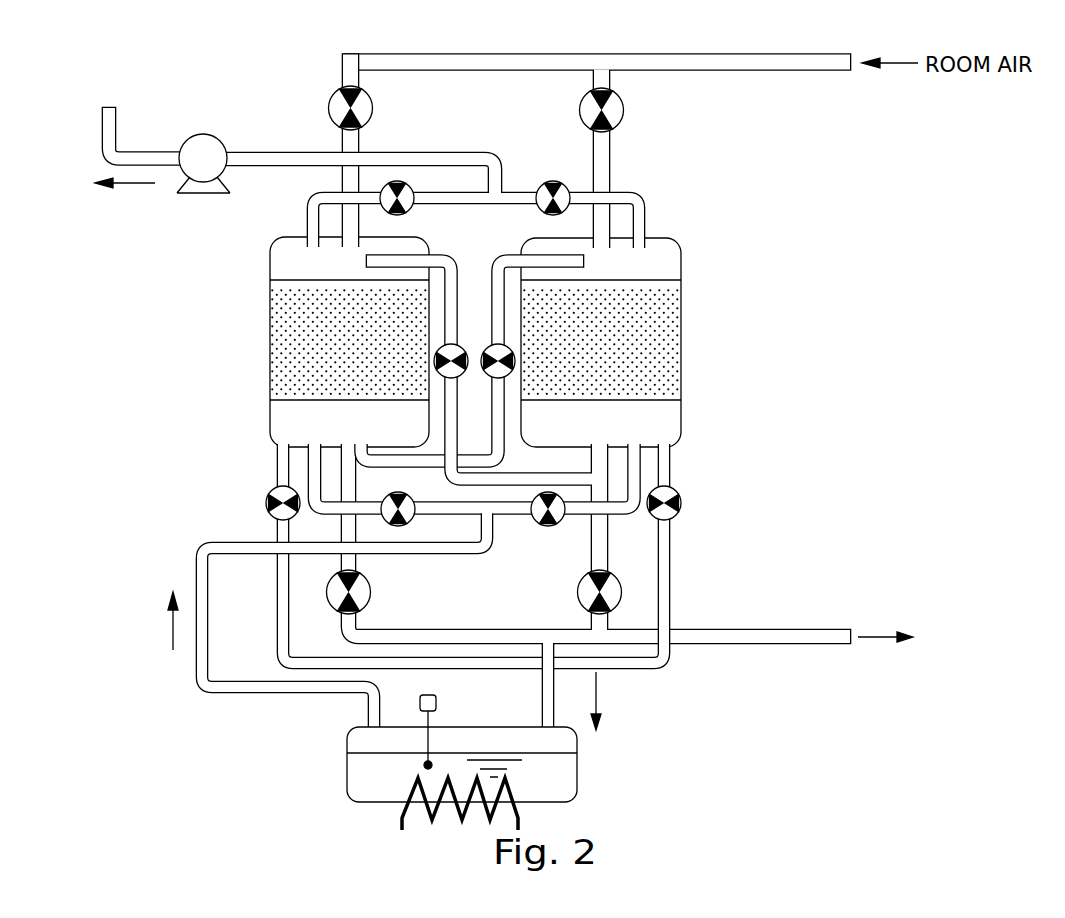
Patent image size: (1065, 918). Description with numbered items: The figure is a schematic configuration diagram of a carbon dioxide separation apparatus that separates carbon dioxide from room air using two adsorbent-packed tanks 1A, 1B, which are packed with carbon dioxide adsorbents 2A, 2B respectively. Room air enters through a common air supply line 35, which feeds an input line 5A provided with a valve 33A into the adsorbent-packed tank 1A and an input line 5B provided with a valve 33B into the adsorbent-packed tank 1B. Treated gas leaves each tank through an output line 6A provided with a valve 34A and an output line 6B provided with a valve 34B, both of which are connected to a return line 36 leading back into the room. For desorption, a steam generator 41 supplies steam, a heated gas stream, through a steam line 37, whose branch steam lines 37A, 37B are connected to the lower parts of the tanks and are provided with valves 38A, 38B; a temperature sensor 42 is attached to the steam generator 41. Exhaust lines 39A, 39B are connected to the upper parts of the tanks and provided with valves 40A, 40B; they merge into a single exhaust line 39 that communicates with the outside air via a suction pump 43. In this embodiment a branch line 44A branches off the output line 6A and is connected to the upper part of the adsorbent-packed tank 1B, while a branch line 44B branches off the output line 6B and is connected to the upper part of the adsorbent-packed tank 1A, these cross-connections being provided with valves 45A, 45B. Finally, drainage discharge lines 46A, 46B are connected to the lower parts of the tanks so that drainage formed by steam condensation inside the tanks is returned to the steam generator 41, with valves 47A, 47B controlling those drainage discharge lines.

The adsorbent-packed tank 1A is at (681, 265).
The adsorbent-packed tank 1B is at (270, 265).
The carbon dioxide adsorbent 2A is at (667, 325).
The carbon dioxide adsorbent 2B is at (283, 337).
The input line 5A is at (610, 152).
The input line 5B is at (342, 142).
The output line 6A is at (607, 548).
The output line 6B is at (342, 534).
The valve 33A is at (624, 108).
The valve 33B is at (329, 103).
The valve 34A is at (578, 592).
The valve 34B is at (327, 607).
The air supply line 35 is at (548, 54).
The return line 36 is at (748, 645).
The steam line 37 is at (195, 665).
The steam line 37A is at (642, 458).
The steam line 37B is at (305, 466).
The valve 38A is at (547, 527).
The valve 38B is at (388, 498).
The exhaust line 39 is at (243, 152).
The exhaust line 39A is at (646, 196).
The exhaust line 39B is at (310, 202).
The valve 40A is at (553, 181).
The valve 40B is at (398, 181).
The steam generator 41 is at (577, 767).
The temperature sensor 42 is at (438, 703).
The suction pump 43 is at (188, 142).
The branch line 44A is at (510, 488).
The branch line 44B is at (430, 470).
The valve 45A is at (452, 344).
The valve 45B is at (495, 344).
The drainage discharge line 46A is at (669, 590).
The drainage discharge line 46B is at (278, 592).
The valve 47A is at (681, 503).
The valve 47B is at (266, 503).